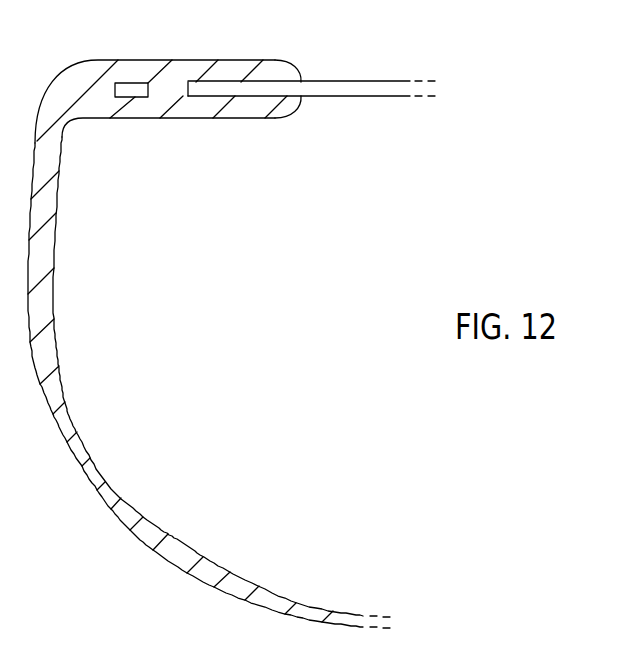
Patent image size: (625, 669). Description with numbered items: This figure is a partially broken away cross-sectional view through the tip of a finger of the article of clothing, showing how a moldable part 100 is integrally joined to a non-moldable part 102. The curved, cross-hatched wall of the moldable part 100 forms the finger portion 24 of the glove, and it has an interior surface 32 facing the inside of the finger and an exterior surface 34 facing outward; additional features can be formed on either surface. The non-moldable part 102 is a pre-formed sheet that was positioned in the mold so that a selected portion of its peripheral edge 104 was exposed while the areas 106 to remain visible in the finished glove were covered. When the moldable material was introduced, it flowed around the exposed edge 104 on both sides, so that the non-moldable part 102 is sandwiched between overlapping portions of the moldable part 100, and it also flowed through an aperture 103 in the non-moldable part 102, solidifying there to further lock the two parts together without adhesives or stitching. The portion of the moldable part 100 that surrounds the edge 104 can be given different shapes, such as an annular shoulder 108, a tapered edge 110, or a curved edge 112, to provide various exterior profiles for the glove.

The finger portion 24 is at (109, 334).
The interior surface 32 is at (90, 448).
The exterior surface 34 is at (92, 490).
The moldable part 100 is at (66, 244).
The non-moldable part 102 is at (121, 82).
The aperture 103 is at (184, 82).
The peripheral edge 104 is at (135, 98).
The exposed area 106 is at (400, 97).
The annular shoulder 108 is at (166, 100).
The tapered edge 110 is at (183, 543).
The curved edge 112 is at (301, 76).